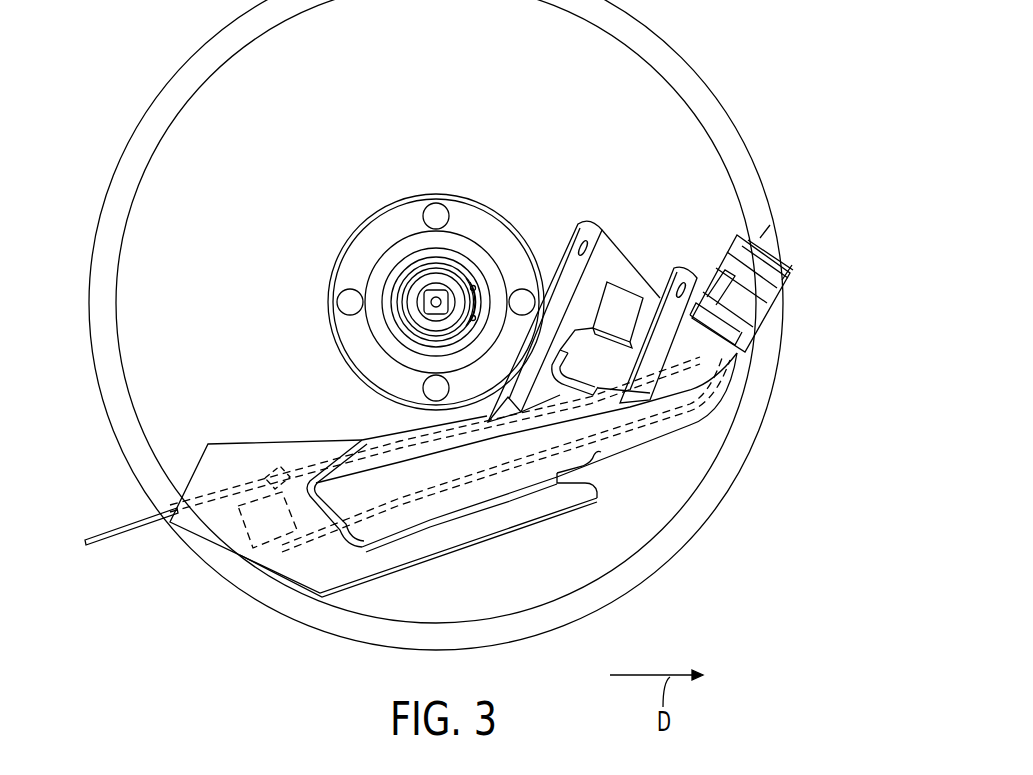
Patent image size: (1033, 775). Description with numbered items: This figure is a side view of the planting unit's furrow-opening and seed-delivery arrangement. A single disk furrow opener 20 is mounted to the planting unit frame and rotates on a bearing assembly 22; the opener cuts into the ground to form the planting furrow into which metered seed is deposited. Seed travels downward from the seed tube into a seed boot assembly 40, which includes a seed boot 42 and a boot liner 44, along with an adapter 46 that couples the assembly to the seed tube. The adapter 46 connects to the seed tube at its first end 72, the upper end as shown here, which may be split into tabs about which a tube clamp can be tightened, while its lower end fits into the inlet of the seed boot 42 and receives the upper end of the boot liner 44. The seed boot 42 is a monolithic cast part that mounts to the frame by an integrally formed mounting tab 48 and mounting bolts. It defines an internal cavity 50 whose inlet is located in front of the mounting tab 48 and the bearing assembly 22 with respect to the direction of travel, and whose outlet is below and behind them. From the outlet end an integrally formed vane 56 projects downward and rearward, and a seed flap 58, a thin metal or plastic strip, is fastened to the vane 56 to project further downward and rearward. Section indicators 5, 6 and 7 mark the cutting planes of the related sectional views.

The single disk furrow opener 20 is at (672, 137).
The bearing assembly 22 is at (462, 262).
The mounting tab 48 is at (595, 252).
The adapter 46 is at (758, 293).
The first end 72 is at (777, 270).
The seed boot assembly 40 is at (704, 422).
The internal cavity 50 is at (698, 455).
The vane 56 is at (222, 528).
The seed boot 42 is at (578, 478).
The seed flap 58 is at (100, 545).
The boot liner 44 is at (277, 548).
The section line 5- 5 is at (653, 455).
The section line 6- 6 is at (407, 547).
The section line 7- 7 is at (355, 557).